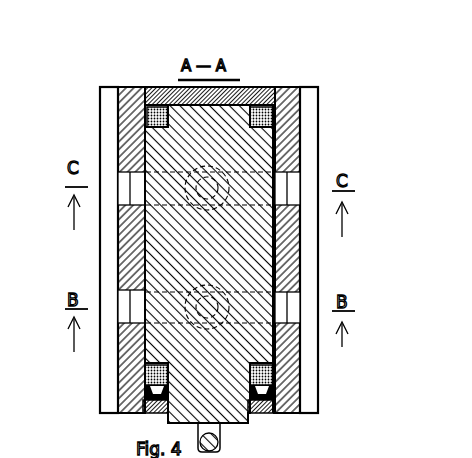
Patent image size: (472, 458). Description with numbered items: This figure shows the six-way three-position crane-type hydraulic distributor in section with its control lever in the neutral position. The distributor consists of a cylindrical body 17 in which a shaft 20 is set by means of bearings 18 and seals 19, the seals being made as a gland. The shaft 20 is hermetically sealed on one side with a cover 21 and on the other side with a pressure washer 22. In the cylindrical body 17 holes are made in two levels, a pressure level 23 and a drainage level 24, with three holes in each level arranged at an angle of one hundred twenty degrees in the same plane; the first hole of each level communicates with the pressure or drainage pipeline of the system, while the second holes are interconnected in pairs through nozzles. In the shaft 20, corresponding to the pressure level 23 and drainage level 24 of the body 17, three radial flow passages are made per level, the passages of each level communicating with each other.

The cylindrical body 17 is at (297, 130).
The bearings 18 is at (307, 415).
The seals 19 is at (130, 415).
The shaft 20 is at (145, 147).
The cover 21 is at (255, 90).
The pressure washer 22 is at (262, 415).
The pressure level 23 is at (288, 310).
The drainage level 24 is at (288, 192).